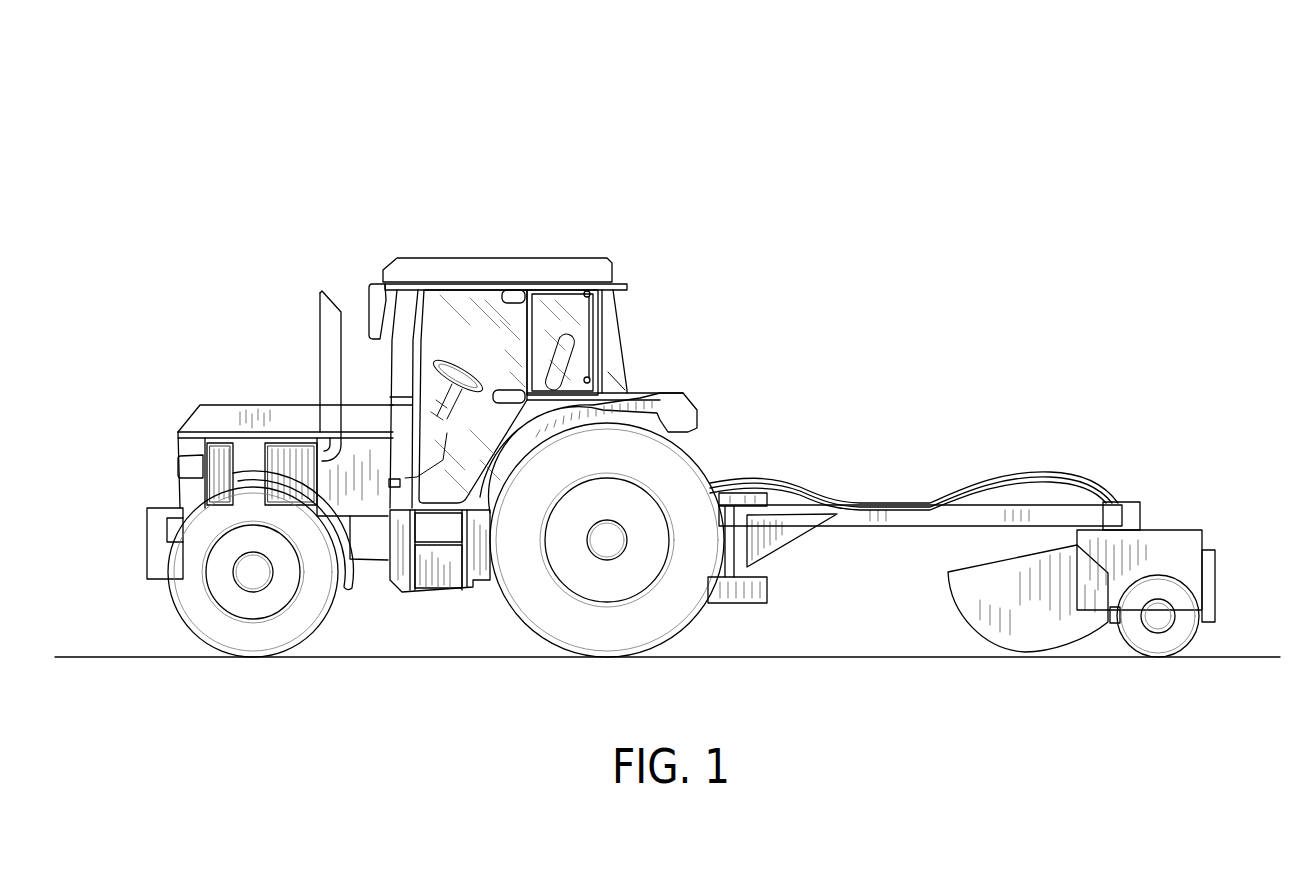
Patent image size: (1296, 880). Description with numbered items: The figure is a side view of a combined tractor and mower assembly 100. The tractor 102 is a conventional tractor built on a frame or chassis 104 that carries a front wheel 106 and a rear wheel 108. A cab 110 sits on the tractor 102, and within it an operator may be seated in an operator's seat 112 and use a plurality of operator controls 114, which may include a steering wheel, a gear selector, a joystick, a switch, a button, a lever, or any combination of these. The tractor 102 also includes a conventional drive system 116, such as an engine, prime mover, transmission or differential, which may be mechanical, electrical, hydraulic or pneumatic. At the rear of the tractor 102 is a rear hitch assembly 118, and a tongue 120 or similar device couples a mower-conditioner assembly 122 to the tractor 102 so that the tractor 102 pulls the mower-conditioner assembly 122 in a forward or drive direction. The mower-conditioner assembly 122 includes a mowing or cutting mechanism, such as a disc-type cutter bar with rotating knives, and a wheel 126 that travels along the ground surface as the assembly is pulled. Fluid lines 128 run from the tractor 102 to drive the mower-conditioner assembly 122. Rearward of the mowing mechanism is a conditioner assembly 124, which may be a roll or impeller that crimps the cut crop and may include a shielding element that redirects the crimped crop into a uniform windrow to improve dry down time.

The combined tractor and mower assembly 100 is at (175, 123).
The tractor 102 is at (270, 341).
The frame or chassis 104 is at (386, 550).
The front wheel 106 is at (251, 632).
The rear wheel 108 is at (609, 632).
The cab 110 is at (598, 248).
The operator's seat 112 is at (568, 344).
The operator controls 114 is at (448, 366).
The drive system 116 is at (248, 455).
The rear hitch assembly 118 is at (802, 546).
The tongue 120 is at (932, 513).
The mower-conditioner assembly 122 is at (1165, 498).
The conditioner assembly 124 is at (1188, 566).
The wheel 126 is at (1156, 644).
The fluid lines 128 is at (1027, 470).